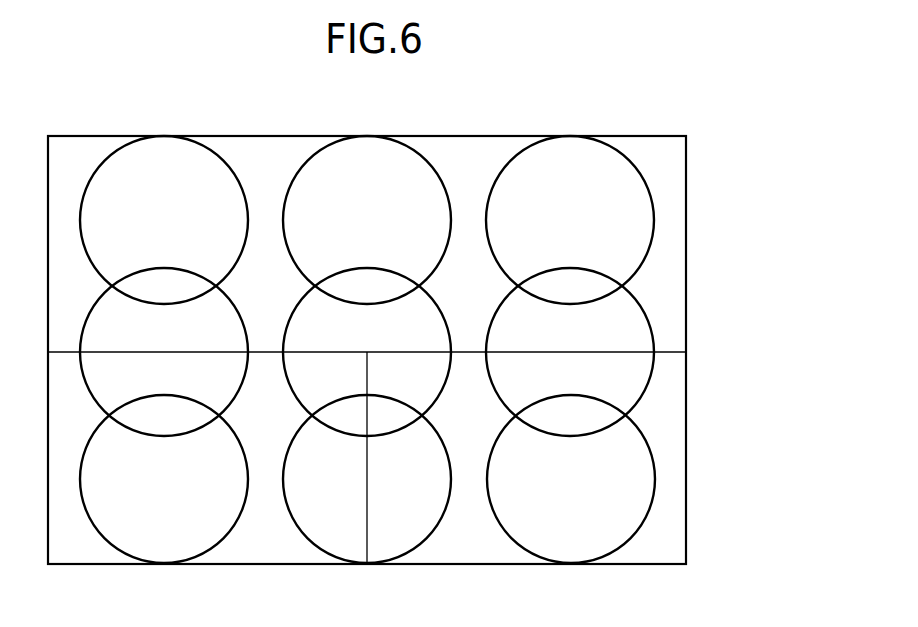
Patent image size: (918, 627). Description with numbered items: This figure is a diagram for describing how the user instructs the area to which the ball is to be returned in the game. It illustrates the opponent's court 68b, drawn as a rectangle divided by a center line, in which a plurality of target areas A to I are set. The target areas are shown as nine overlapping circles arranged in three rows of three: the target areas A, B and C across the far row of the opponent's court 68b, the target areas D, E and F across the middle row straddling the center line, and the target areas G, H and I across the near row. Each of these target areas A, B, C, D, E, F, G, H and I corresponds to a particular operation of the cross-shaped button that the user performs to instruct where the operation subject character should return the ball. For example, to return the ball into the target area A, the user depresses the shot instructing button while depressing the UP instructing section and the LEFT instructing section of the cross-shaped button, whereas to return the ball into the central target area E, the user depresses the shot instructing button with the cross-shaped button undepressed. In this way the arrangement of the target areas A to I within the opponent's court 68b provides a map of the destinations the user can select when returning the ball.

The opponent's court 68b is at (667, 175).
The target area A is at (164, 220).
The target area B is at (367, 220).
The target area C is at (570, 220).
The target area D is at (164, 352).
The target area E is at (367, 352).
The target area F is at (570, 352).
The target area G is at (164, 479).
The target area H is at (367, 479).
The target area I is at (571, 479).